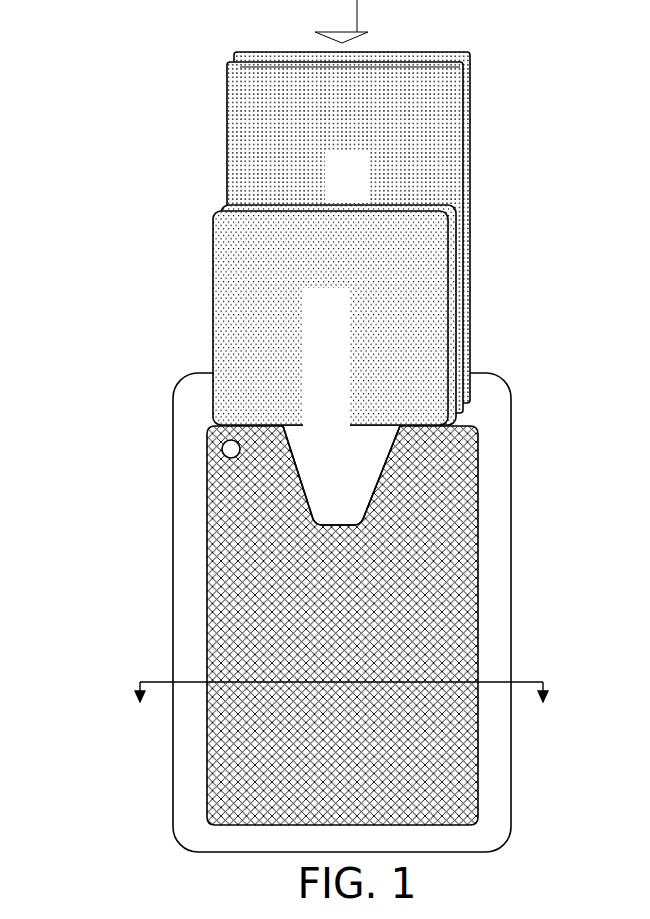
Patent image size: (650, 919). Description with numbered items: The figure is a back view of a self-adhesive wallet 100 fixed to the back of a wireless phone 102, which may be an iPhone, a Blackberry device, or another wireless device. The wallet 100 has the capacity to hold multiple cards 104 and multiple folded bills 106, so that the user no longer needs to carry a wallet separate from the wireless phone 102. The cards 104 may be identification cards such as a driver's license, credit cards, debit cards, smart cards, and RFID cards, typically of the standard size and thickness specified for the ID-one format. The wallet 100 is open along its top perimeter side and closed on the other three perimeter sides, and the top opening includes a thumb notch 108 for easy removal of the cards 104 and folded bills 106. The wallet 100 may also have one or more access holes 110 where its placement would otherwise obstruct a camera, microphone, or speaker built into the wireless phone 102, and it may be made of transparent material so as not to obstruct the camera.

The self-adhesive wallet 100 is at (500, 543).
The wireless phone 102 is at (511, 464).
The cards 104 is at (428, 347).
The folded bills 106 is at (443, 160).
The thumb notch 108 is at (298, 500).
The access hole 110 is at (207, 448).